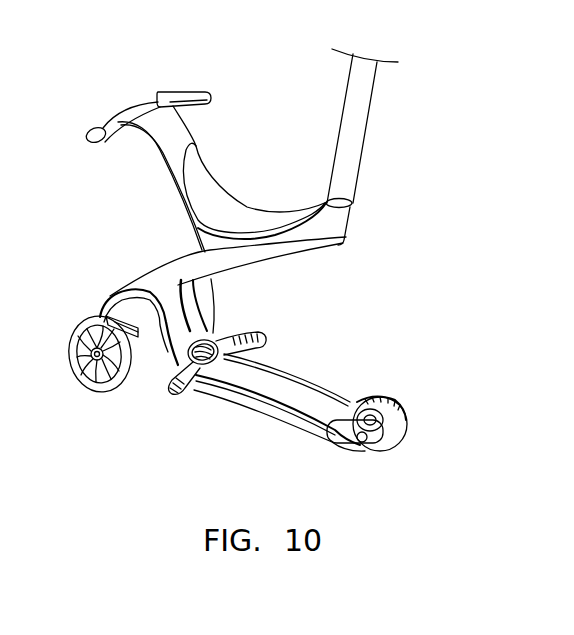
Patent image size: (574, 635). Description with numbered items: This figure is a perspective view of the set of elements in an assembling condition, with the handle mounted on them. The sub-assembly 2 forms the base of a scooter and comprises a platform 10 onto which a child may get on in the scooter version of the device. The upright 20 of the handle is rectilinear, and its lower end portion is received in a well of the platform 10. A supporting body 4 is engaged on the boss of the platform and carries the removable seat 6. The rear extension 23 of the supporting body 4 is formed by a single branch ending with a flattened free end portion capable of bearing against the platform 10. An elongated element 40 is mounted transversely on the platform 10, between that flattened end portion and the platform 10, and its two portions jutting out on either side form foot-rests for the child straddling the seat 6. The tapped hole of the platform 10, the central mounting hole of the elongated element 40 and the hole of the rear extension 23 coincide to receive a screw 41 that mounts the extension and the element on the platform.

The sub-assembly forming the base of a scooter 2 is at (232, 419).
The supporting body 4 is at (320, 247).
The removable seat 6 is at (229, 185).
The platform 10 is at (341, 393).
The upright 20 is at (357, 113).
The rear extension 23 is at (182, 288).
The elongated element 40 is at (274, 342).
The screw 41 is at (170, 360).